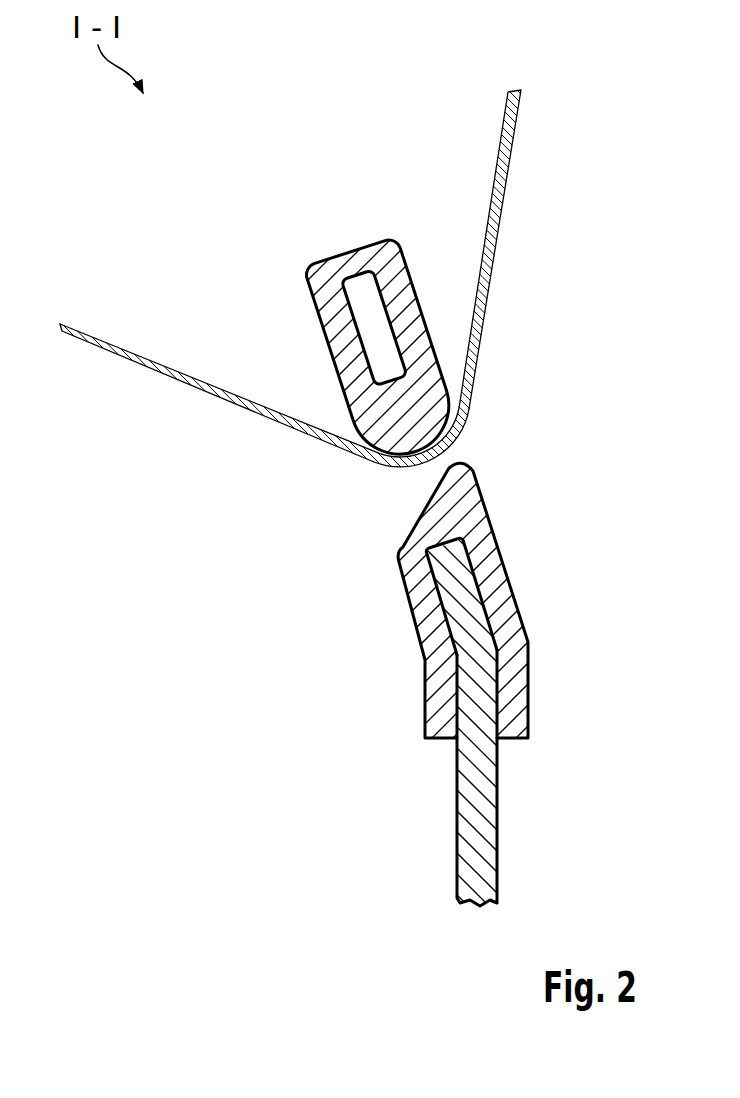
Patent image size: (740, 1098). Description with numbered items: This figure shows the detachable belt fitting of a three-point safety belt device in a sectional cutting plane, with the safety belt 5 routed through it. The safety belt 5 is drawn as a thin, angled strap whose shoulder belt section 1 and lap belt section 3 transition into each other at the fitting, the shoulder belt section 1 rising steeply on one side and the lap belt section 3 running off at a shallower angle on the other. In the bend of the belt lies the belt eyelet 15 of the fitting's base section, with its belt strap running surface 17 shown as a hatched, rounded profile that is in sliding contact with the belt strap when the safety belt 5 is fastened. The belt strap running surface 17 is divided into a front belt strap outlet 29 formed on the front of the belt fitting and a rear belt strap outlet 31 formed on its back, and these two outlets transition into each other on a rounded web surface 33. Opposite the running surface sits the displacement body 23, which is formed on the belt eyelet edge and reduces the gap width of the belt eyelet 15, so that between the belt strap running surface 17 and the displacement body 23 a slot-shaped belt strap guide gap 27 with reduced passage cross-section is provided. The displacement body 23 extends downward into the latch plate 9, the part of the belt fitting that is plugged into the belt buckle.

The shoulder belt section 1 is at (499, 221).
The lap belt section 3 is at (208, 398).
The safety belt 5 is at (150, 340).
The latch plate 9 is at (487, 808).
The belt eyelet 15 is at (364, 471).
The belt strap running surface 17 is at (297, 162).
The displacement body 23 is at (466, 476).
The belt strap guide gap 27 is at (444, 458).
The front belt strap outlet 29 is at (437, 350).
The rear belt strap outlet 31 is at (325, 290).
The rounded web surface 33 is at (392, 370).